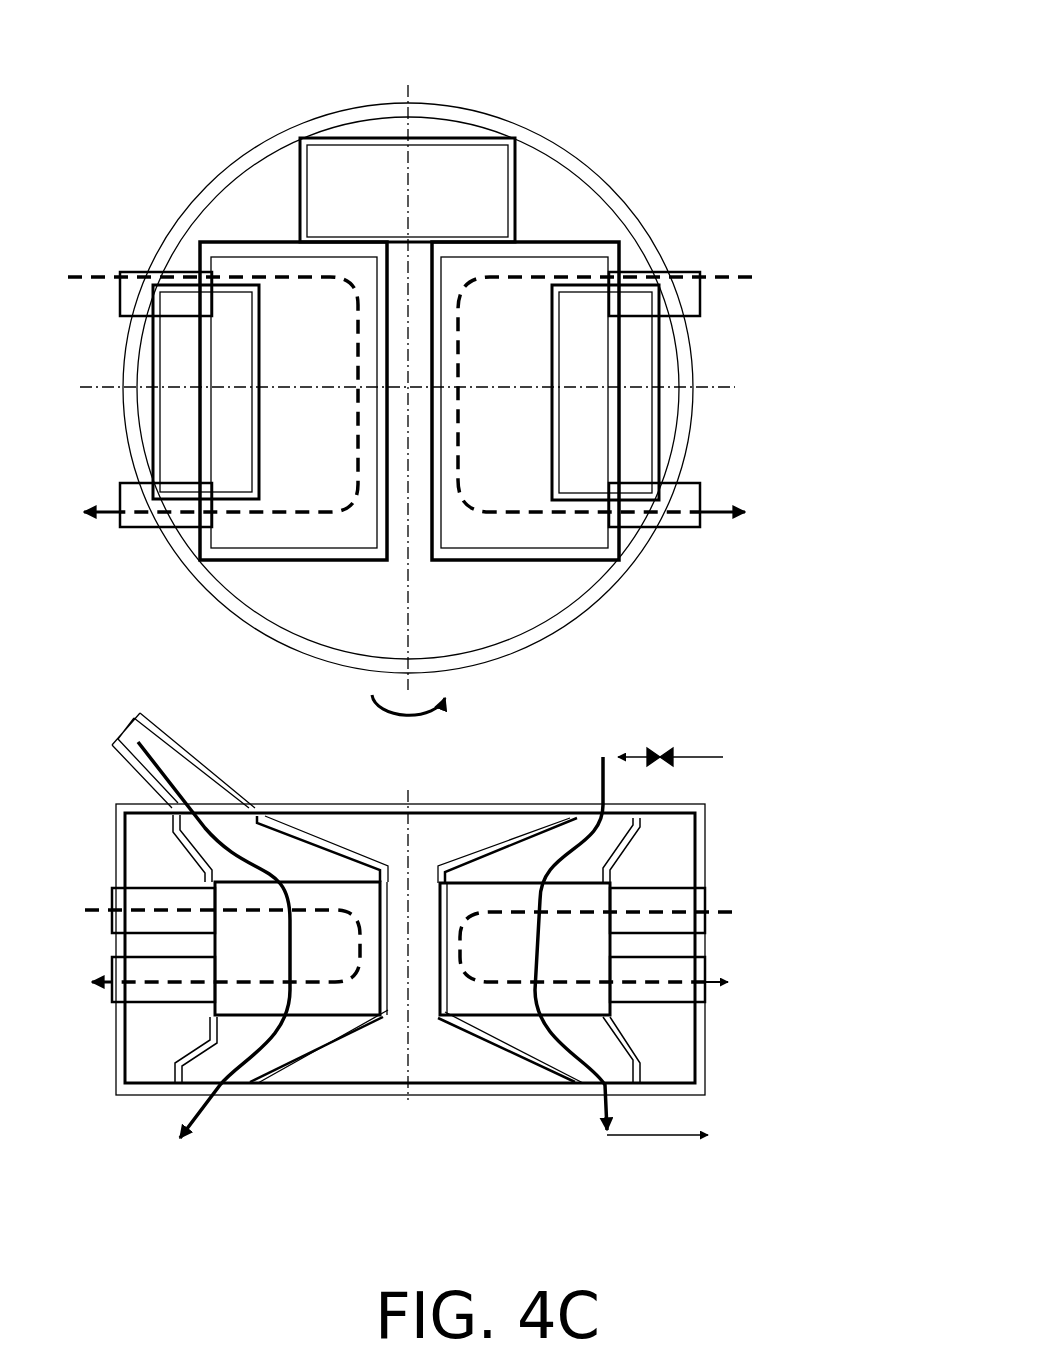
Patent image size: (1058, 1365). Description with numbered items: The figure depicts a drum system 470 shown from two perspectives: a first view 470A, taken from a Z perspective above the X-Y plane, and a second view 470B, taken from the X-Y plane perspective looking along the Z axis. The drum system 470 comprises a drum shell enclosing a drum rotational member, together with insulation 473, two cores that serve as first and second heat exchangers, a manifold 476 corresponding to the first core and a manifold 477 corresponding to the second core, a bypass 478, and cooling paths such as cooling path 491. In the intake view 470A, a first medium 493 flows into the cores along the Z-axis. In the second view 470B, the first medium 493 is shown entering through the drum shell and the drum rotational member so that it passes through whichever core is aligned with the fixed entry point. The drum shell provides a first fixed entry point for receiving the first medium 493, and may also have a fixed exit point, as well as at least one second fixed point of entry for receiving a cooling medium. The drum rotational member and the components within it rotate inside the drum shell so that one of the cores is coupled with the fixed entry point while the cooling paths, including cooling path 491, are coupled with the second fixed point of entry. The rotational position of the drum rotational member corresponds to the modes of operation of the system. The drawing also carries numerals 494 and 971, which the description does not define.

The drum system 470 is at (843, 105).
The first view 470A is at (810, 346).
The second view 470B is at (810, 892).
The insulation 473 is at (524, 186).
The manifold 476 is at (163, 283).
The manifold 477 is at (612, 293).
The bypass 478 is at (458, 178).
The cooling path 491 is at (83, 912).
The first medium 493 is at (205, 1100).
The second flow path 494 is at (607, 1107).
The fluid supply line 971 is at (82, 282).